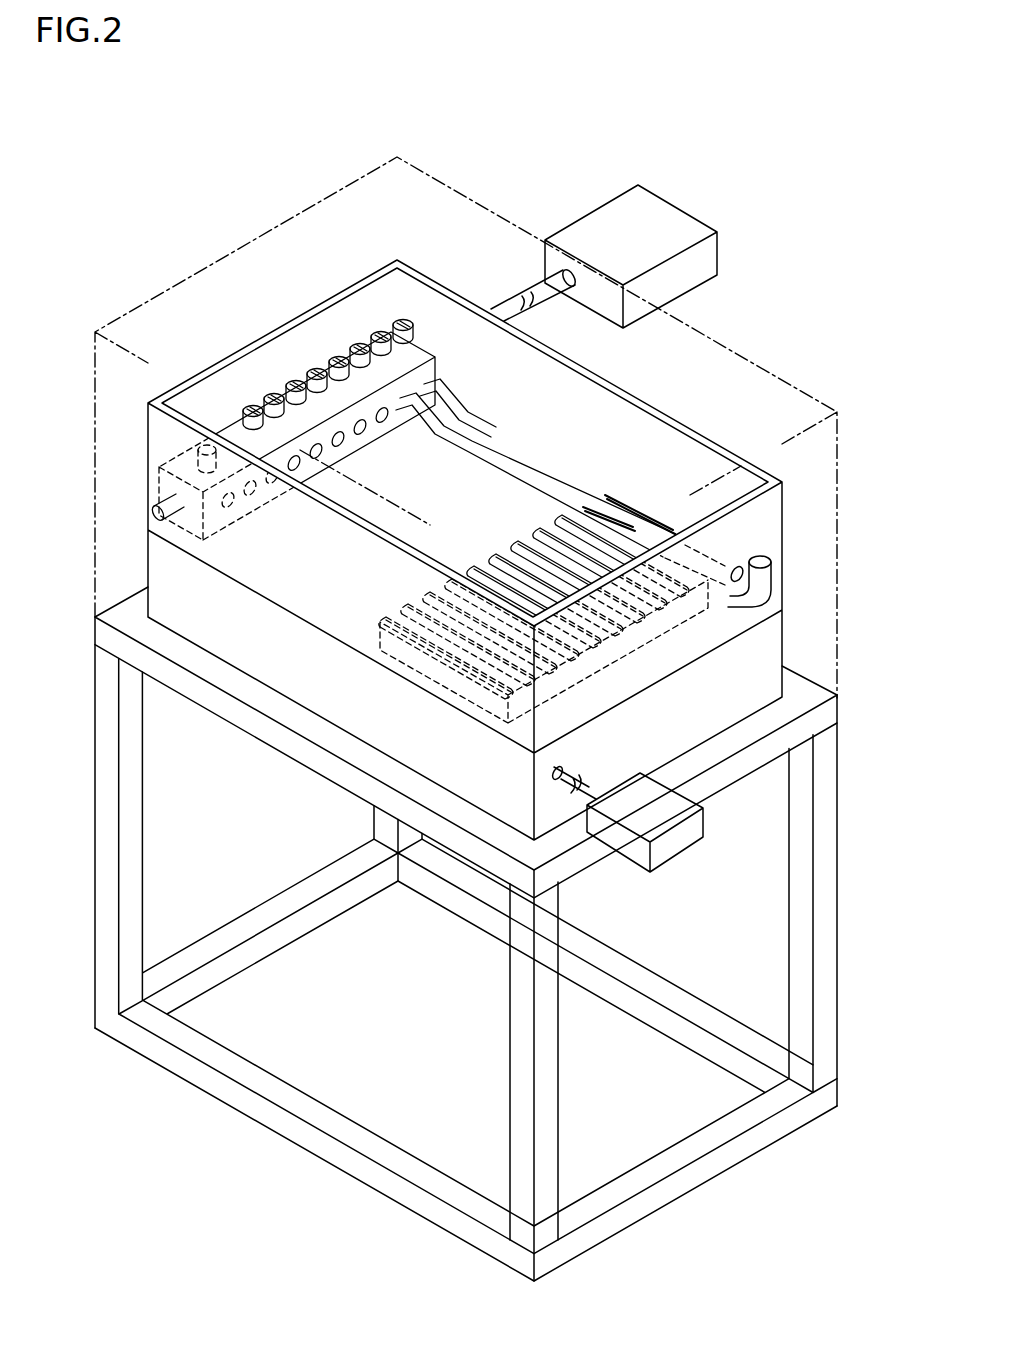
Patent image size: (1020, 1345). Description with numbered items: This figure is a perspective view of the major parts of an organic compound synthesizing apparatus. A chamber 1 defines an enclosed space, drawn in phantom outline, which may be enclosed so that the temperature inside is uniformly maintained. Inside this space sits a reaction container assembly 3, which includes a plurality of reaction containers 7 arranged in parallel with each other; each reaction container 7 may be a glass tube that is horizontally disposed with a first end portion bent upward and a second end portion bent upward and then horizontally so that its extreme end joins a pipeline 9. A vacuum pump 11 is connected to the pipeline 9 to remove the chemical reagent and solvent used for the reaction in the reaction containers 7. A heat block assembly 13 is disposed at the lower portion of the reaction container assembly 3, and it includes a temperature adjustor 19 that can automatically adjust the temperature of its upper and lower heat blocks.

The chamber 1 is at (267, 232).
The reaction container assembly 3 is at (680, 410).
The reaction containers 7 is at (482, 437).
The pipeline 9 is at (255, 415).
The vacuum pump 11 is at (672, 215).
The heat block assembly 13 is at (792, 638).
The temperature adjustor 19 is at (690, 837).